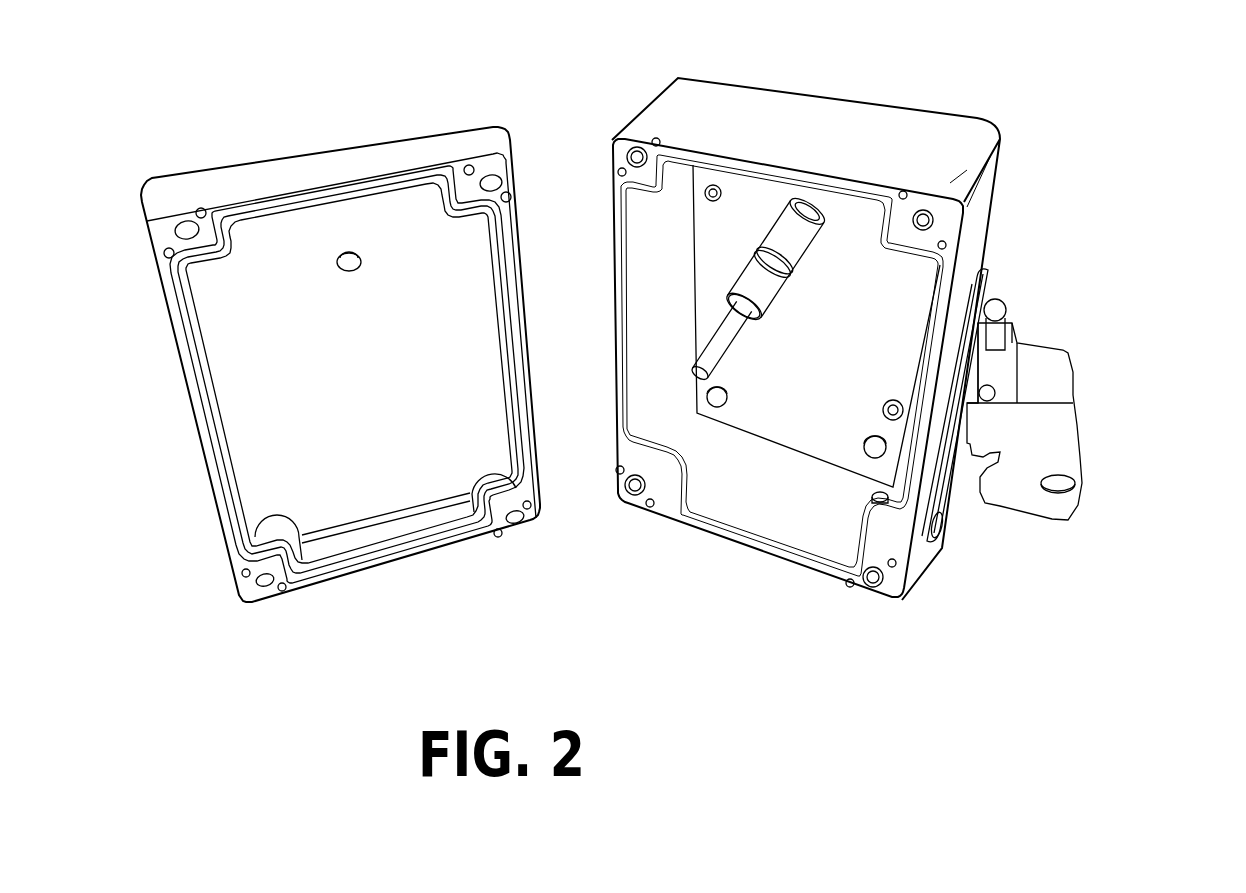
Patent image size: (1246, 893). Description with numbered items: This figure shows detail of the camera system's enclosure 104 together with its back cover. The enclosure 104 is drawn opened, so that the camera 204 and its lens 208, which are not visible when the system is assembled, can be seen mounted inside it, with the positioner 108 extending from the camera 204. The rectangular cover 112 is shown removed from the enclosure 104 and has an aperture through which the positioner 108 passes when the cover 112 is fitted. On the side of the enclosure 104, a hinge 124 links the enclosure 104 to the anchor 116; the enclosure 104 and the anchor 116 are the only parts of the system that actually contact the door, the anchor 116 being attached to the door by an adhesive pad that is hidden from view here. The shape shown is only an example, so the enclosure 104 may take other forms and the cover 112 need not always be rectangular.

The enclosure 104 is at (738, 512).
The positioner 108 is at (735, 330).
The cover 112 is at (275, 477).
The anchor 116 is at (1052, 378).
The hinge 124 is at (1003, 303).
The camera 204 is at (811, 259).
The lens 208 is at (829, 216).